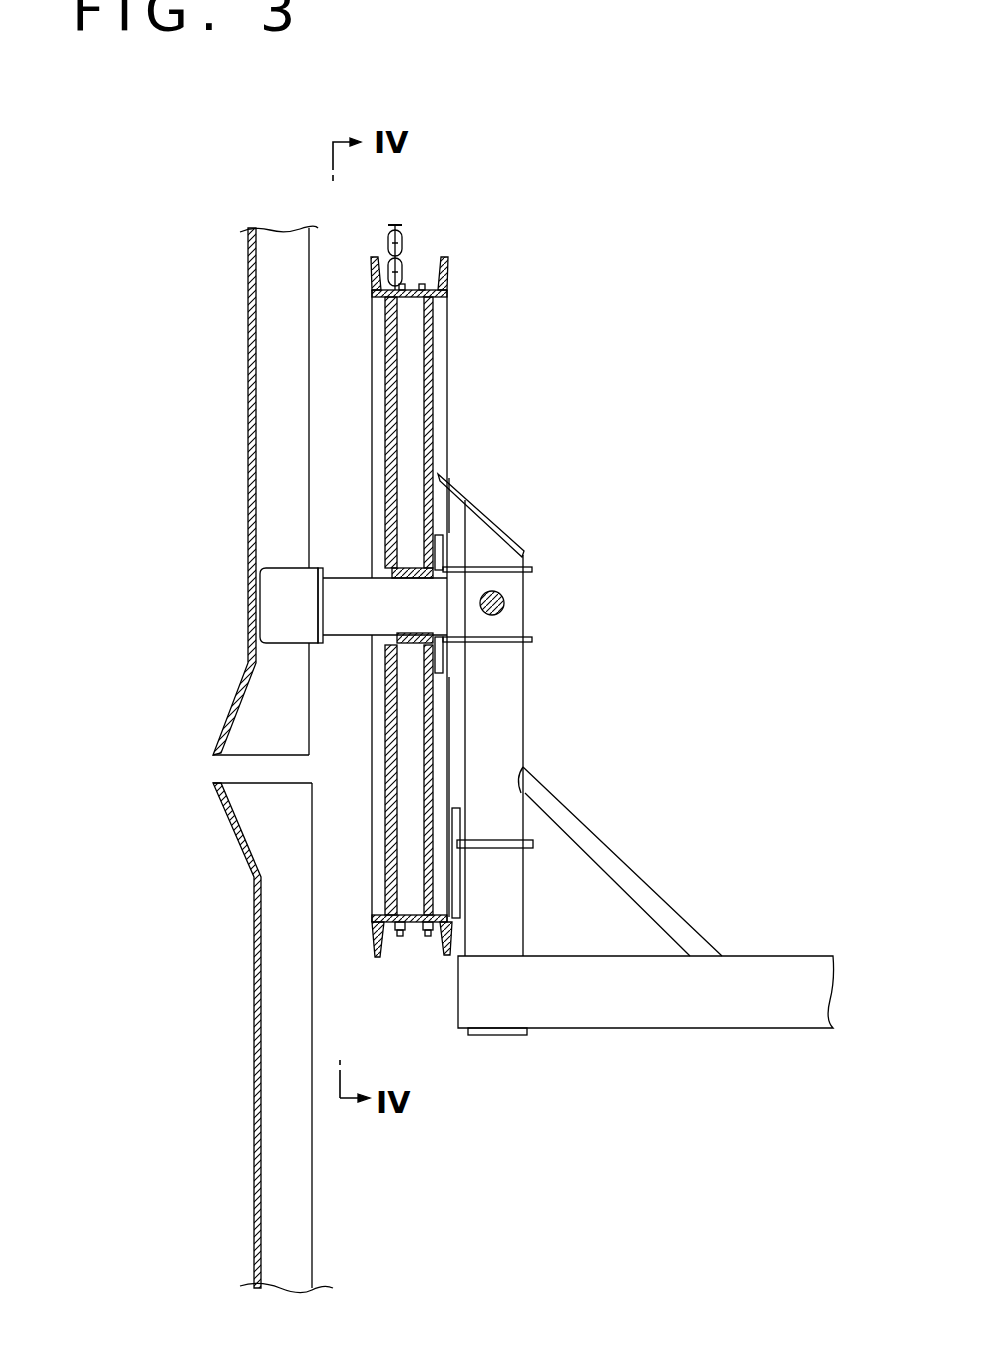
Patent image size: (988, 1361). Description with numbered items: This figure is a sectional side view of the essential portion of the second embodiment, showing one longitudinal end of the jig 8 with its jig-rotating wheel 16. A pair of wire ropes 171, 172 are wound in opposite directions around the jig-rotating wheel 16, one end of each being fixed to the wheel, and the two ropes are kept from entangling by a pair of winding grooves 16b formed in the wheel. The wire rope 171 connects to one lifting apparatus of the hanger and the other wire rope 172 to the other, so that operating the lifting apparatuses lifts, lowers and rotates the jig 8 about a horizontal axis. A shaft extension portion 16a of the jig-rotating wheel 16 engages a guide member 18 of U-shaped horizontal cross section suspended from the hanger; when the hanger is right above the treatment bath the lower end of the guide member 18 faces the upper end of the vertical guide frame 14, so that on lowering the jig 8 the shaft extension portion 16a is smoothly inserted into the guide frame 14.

The jig 8 is at (677, 1003).
The guide frame 14 is at (254, 995).
The jig-rotating wheel 16 is at (447, 308).
The shaft extension portion 16a is at (292, 598).
The winding groove 16b is at (403, 286).
The wire rope 171 is at (383, 977).
The wire rope 172 is at (427, 925).
The guide member 18 is at (248, 378).